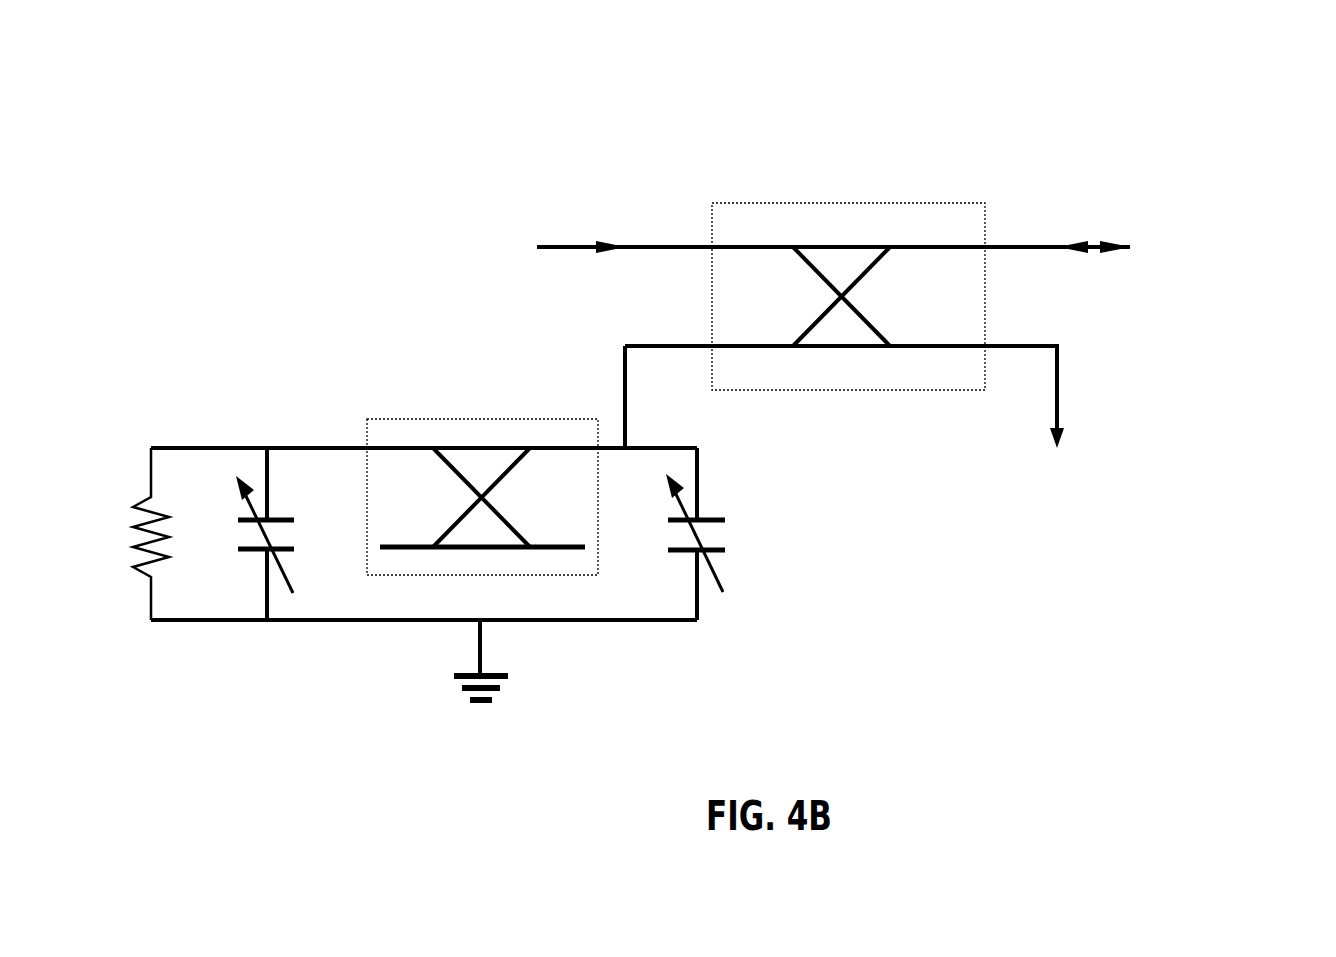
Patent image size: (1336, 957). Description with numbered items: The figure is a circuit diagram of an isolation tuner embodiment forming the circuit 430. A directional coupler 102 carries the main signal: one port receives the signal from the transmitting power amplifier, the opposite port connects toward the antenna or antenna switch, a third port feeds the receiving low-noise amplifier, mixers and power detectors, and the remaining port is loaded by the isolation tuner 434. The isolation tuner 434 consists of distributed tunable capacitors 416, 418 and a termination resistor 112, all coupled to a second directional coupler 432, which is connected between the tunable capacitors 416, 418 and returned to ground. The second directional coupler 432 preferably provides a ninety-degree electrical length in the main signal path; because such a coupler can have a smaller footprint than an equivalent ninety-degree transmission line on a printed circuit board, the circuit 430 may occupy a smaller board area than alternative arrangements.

The circuit 430 is at (170, 138).
The directional coupler 102 is at (768, 182).
The isolation tuner 434 is at (175, 368).
The second directional coupler 432 is at (490, 412).
The termination resistor 112 is at (112, 546).
The tunable capacitor 416 is at (240, 586).
The tunable capacitor 418 is at (681, 588).